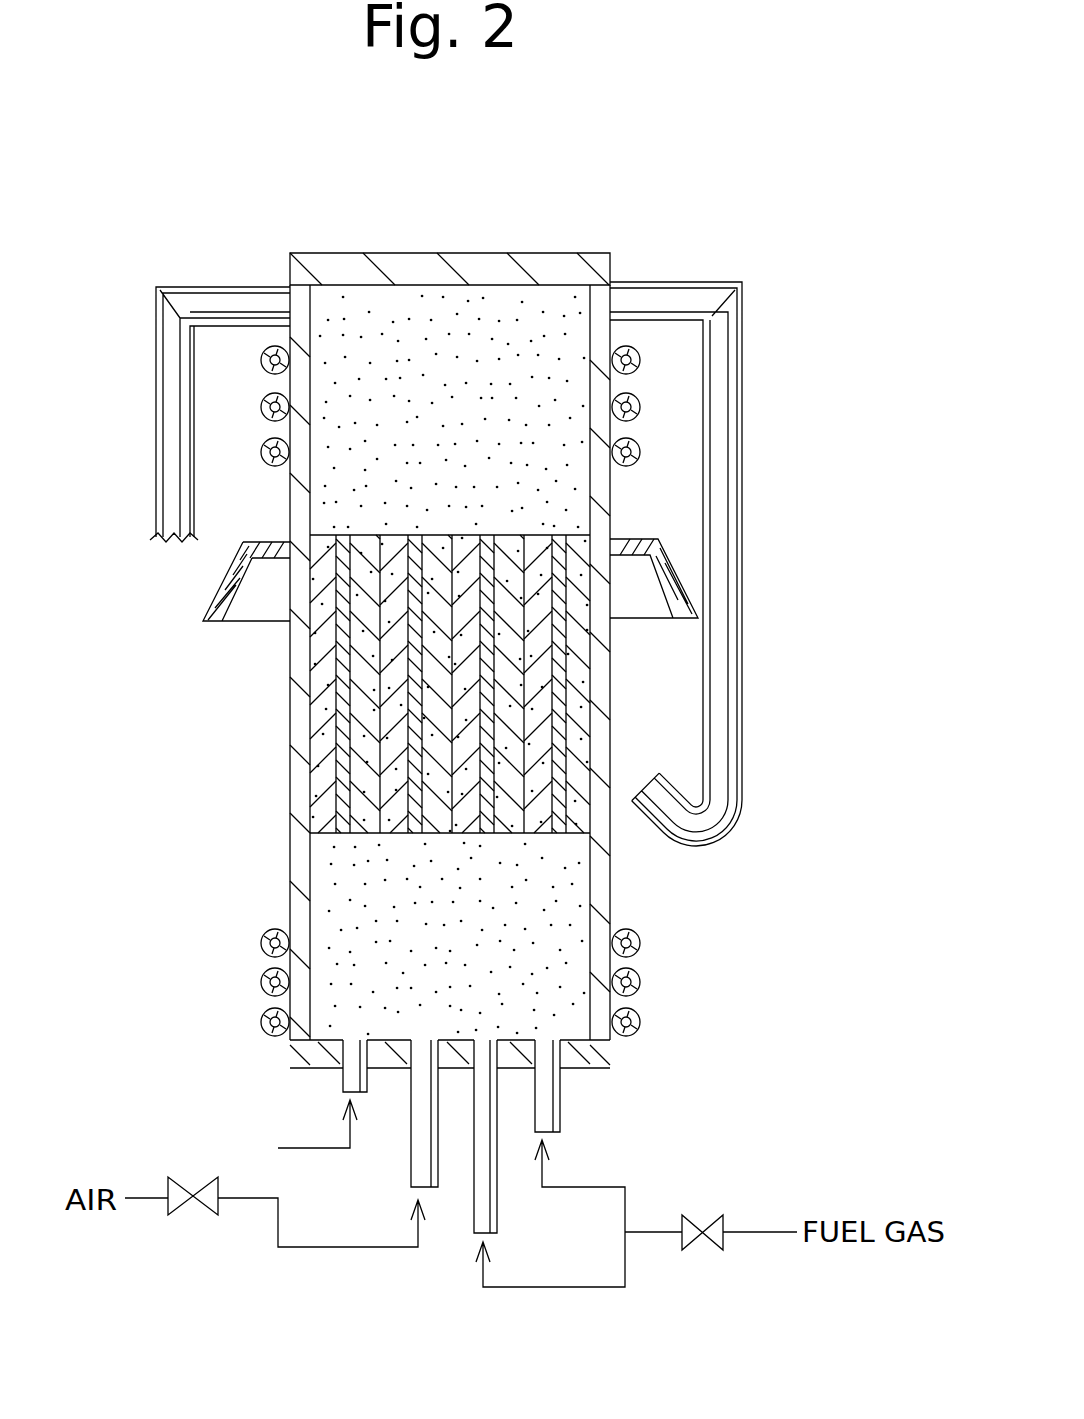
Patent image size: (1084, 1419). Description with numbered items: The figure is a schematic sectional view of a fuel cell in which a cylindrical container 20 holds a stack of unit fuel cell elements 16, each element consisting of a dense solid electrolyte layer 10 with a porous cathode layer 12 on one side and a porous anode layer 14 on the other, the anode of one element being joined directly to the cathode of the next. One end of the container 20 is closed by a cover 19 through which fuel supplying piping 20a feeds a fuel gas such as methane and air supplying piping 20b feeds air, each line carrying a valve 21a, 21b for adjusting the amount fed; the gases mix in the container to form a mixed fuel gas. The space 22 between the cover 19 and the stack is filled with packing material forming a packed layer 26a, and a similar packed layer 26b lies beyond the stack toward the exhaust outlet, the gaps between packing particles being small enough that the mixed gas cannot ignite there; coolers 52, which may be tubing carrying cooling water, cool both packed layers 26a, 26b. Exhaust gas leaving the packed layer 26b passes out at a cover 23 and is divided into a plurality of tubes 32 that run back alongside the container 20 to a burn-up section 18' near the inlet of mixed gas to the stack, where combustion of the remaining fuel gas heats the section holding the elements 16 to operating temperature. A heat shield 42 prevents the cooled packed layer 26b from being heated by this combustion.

The cover 23 is at (404, 268).
The packed layer 26b is at (487, 296).
The packed layer 26a is at (582, 858).
The container 20 is at (300, 723).
The unit fuel cell element 16 is at (140, 768).
The anode layer 14 is at (390, 837).
The solid electrolyte layer 10 is at (413, 837).
The cathode layer 12 is at (438, 837).
The space 22 is at (350, 905).
The cooler 52 is at (673, 402).
The tube 32 is at (163, 433).
The burn-up section 18' is at (757, 781).
The heat shield 42 is at (213, 600).
The cover 19 is at (585, 1070).
The air supplying piping 20b is at (340, 1083).
The fuel supplying piping 20a is at (560, 1110).
The valve 21b is at (200, 1210).
The valve 21a is at (708, 1240).